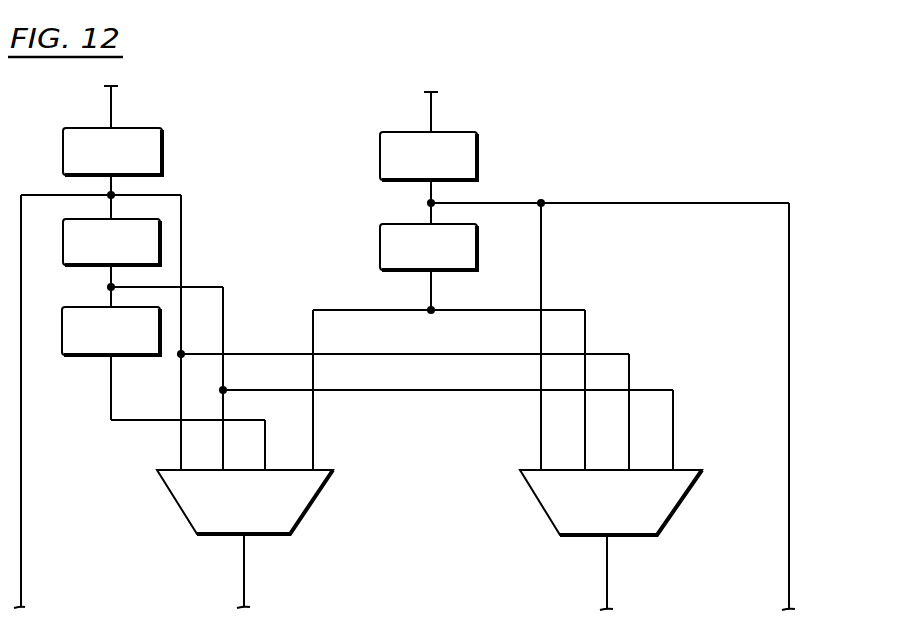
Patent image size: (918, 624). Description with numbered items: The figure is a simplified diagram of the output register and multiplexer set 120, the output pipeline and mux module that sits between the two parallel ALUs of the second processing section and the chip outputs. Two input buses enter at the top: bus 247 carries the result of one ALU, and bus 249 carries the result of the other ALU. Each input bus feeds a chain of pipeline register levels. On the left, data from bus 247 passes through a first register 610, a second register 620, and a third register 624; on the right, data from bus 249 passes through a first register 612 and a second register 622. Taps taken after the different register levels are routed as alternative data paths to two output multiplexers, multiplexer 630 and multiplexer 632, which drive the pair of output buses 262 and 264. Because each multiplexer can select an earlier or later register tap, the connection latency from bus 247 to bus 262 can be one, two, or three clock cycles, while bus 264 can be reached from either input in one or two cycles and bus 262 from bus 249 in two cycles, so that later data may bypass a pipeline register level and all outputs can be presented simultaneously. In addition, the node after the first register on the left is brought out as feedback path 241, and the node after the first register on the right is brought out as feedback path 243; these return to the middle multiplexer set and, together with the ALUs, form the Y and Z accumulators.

The output register and multiplexer set 120 is at (673, 133).
The bus 247 is at (114, 97).
The bus 249 is at (433, 102).
The register 610 is at (162, 148).
The register 612 is at (478, 151).
The register 620 is at (121, 218).
The register 622 is at (478, 248).
The register 624 is at (120, 307).
The multiplexer 630 is at (176, 492).
The multiplexer 632 is at (538, 502).
The feedback path 241 is at (21, 553).
The feedback path 243 is at (788, 578).
The bus 262 is at (244, 578).
The bus 264 is at (607, 578).